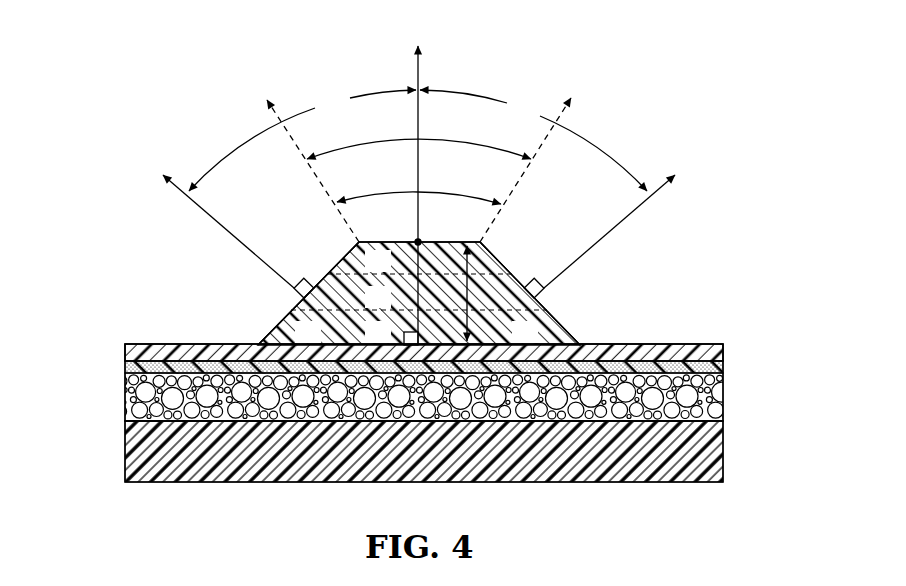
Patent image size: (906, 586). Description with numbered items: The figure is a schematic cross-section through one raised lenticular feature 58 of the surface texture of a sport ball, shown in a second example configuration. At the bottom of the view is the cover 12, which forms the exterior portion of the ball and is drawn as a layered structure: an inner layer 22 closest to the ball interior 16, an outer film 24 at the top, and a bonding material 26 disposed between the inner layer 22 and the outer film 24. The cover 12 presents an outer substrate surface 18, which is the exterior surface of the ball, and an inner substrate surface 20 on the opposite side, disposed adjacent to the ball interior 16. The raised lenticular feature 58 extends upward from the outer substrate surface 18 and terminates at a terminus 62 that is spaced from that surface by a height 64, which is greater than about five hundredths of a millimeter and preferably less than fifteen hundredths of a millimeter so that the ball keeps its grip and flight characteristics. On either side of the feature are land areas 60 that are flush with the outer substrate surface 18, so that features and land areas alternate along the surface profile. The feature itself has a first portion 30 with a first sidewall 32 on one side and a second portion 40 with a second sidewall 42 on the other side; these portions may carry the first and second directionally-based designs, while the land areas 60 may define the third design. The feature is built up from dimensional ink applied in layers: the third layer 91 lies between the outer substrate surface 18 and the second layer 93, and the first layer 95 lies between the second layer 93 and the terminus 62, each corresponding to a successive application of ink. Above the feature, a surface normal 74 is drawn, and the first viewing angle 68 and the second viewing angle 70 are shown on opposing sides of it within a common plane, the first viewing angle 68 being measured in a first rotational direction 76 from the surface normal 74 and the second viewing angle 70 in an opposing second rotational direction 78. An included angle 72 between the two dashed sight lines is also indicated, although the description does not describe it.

The cover 12 is at (745, 344).
The ball interior 16 is at (125, 455).
The outer substrate surface 18 is at (419, 321).
The inner substrate surface 20 is at (575, 428).
The inner layer 22 is at (125, 400).
The outer film 24 is at (125, 356).
The bonding material 26 is at (125, 370).
The first portion 30 is at (319, 342).
The first sidewall 32 is at (271, 311).
The second portion 40 is at (536, 342).
The second sidewall 42 is at (569, 313).
The raised lenticular feature 58 is at (595, 267).
The land area 60 is at (172, 339).
The terminus 62 is at (418, 240).
The height 64 is at (469, 280).
The first viewing angle 68 is at (302, 140).
The second viewing angle 70 is at (533, 140).
The included angle 72 is at (432, 139).
The surface normal 74 is at (417, 70).
The first rotational direction 76 is at (385, 191).
The second rotational direction 78 is at (451, 191).
The third layer 91 is at (389, 342).
The second layer 93 is at (389, 306).
The first layer 95 is at (389, 270).